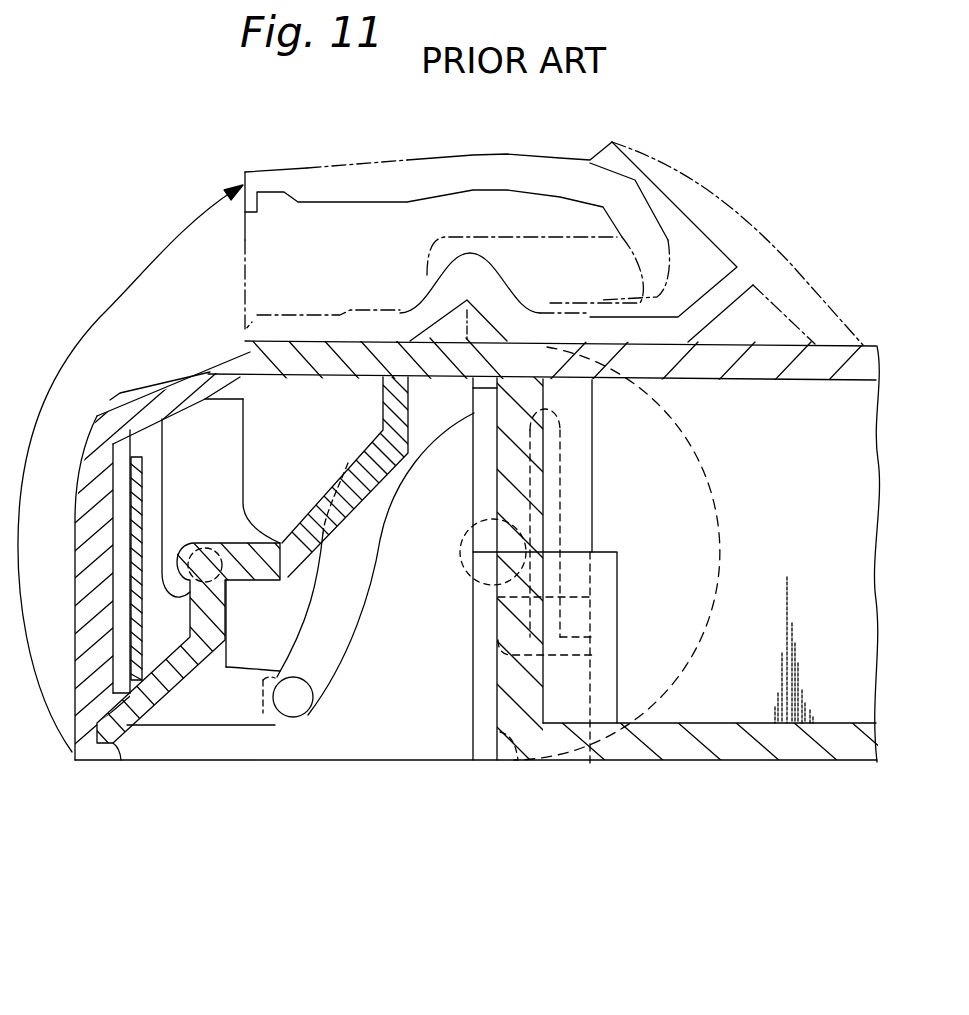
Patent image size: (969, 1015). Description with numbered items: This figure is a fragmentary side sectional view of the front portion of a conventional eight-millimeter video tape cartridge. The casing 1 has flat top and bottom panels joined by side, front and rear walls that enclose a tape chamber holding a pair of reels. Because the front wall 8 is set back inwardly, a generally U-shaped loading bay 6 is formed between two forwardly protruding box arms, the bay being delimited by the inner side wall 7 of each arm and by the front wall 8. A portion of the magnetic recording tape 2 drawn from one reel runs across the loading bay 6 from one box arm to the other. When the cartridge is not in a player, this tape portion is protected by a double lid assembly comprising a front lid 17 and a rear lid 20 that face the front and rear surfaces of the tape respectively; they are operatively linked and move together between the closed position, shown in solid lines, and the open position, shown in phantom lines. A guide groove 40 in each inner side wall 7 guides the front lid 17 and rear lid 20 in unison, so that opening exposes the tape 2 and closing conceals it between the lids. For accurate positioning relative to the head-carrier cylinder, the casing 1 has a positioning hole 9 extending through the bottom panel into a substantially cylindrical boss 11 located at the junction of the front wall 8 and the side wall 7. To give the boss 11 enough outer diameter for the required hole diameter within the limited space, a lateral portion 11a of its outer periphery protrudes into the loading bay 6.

The casing 1 is at (762, 335).
The magnetic recording tape 2 is at (130, 560).
The loading bay 6 is at (362, 718).
The inner side wall 7 is at (410, 738).
The front wall 8 is at (487, 657).
The positioning hole 9 is at (515, 748).
The boss 11 is at (620, 627).
The lateral portion 11a is at (477, 480).
The front lid 17 is at (85, 412).
The rear lid 20 is at (353, 530).
The guide groove 40 is at (352, 657).